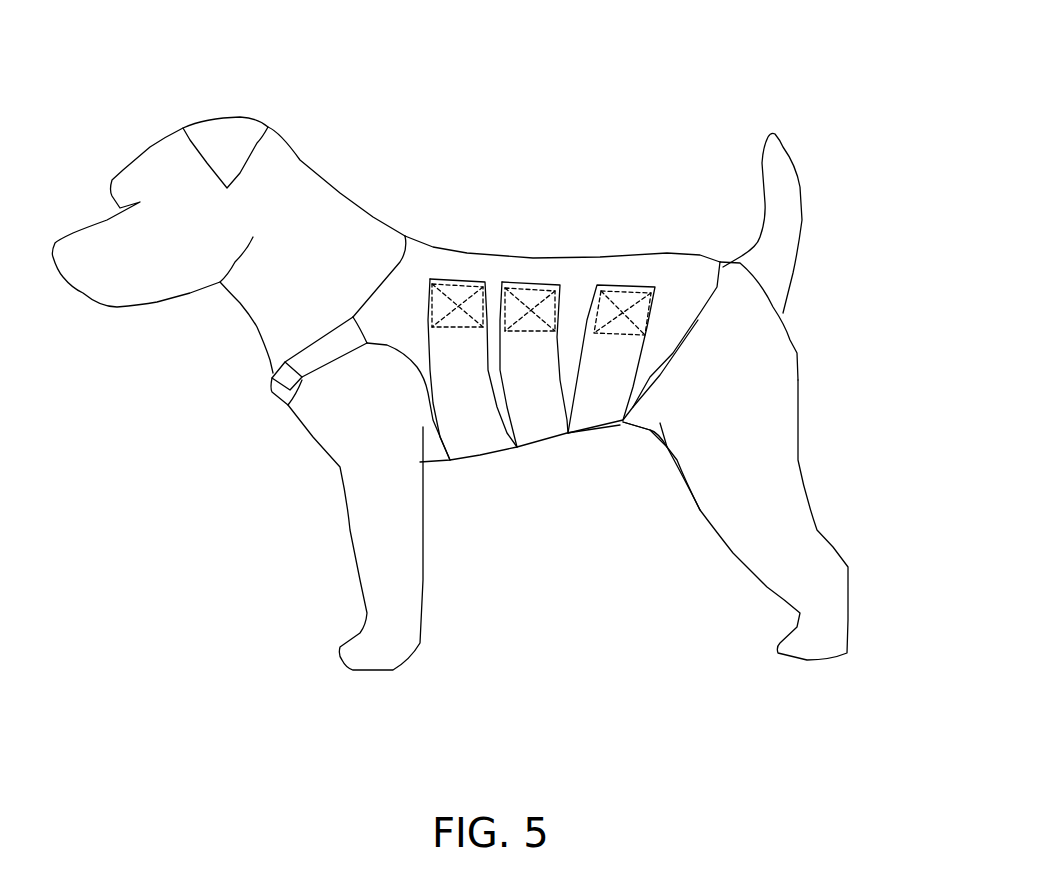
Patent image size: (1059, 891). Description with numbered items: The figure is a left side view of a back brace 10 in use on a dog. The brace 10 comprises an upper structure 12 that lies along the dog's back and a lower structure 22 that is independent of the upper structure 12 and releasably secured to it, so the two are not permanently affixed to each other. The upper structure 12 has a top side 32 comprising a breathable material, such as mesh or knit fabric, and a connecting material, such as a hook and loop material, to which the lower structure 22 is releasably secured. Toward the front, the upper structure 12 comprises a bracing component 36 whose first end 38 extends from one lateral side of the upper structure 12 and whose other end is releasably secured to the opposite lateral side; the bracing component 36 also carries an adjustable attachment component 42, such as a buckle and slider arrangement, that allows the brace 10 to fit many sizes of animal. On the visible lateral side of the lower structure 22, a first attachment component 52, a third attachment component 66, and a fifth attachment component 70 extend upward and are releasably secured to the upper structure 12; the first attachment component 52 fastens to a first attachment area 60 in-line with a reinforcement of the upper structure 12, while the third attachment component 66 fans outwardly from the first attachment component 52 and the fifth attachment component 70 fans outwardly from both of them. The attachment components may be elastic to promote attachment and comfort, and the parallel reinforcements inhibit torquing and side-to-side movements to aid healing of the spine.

The brace 10 is at (735, 108).
The upper structure 12 is at (473, 180).
The lower structure 22 is at (625, 465).
The top side 32 is at (708, 337).
The bracing component 36 is at (300, 330).
The first end 38 is at (368, 335).
The adjustable attachment component 42 is at (313, 390).
The first attachment component 52 is at (475, 440).
The first attachment area 60 is at (673, 378).
The third attachment component 66 is at (535, 420).
The fifth attachment component 70 is at (600, 398).